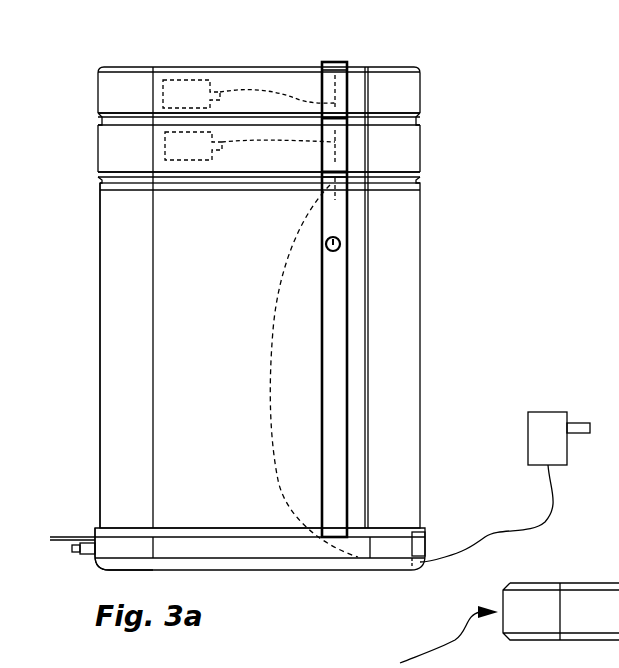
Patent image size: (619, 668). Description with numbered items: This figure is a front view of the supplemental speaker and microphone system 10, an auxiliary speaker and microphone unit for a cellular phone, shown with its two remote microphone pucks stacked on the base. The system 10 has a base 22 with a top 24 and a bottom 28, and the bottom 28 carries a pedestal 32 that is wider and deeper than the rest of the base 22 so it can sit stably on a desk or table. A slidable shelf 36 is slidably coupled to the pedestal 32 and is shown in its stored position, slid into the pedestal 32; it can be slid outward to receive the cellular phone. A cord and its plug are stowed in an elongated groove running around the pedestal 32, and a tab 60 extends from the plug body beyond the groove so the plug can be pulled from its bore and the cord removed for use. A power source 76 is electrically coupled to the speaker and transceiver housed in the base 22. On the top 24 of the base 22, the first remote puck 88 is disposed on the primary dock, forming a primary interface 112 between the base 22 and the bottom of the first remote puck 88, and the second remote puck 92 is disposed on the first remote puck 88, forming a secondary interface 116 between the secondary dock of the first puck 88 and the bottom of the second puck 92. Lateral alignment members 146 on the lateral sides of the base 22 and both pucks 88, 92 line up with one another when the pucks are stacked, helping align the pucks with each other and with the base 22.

The supplemental speaker and microphone system 10 is at (452, 297).
The base 22 is at (408, 248).
The top 24 is at (99, 182).
The bottom 28 is at (99, 517).
The pedestal 32 is at (425, 540).
The slidable shelf 36 is at (265, 552).
The tab 60 is at (78, 556).
The power source 76 is at (548, 412).
The first remote puck 88 is at (445, 139).
The second remote puck 92 is at (445, 91).
The primary interface 112 is at (99, 178).
The secondary interface 116 is at (99, 118).
The lateral alignment members 146 is at (337, 92).